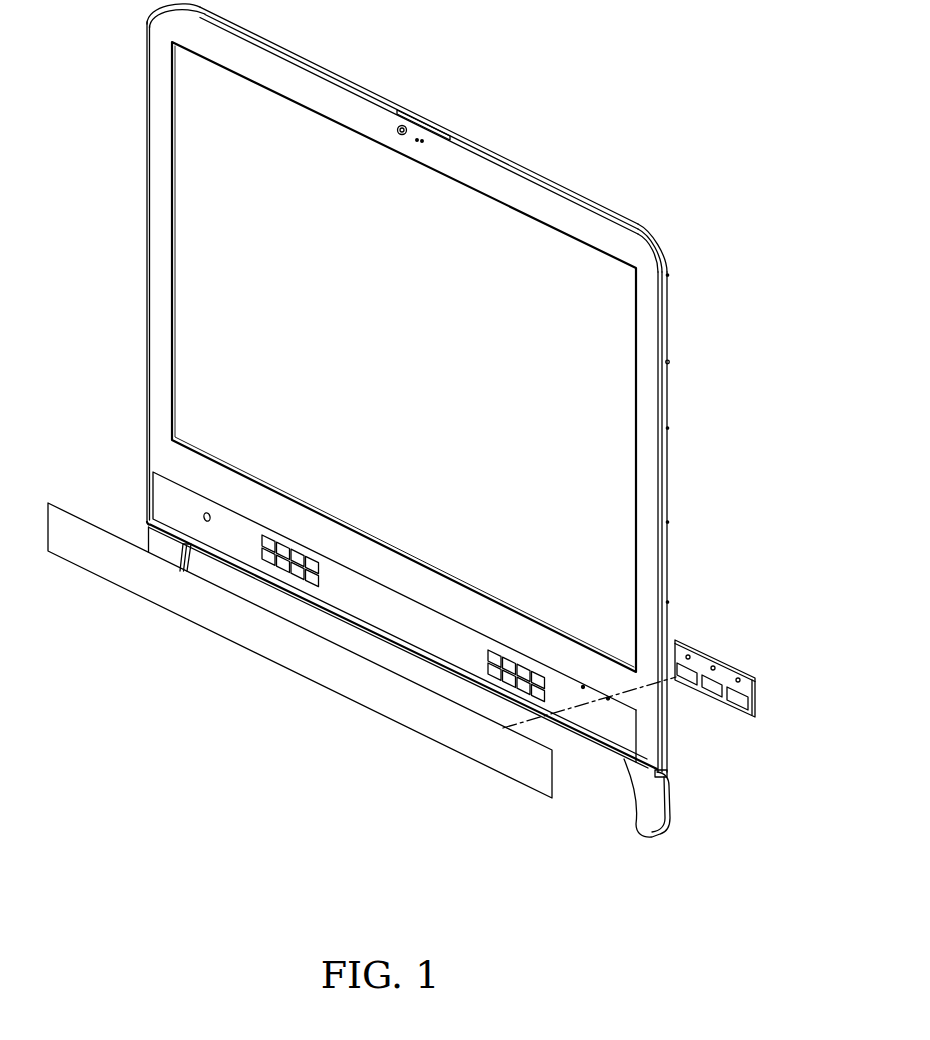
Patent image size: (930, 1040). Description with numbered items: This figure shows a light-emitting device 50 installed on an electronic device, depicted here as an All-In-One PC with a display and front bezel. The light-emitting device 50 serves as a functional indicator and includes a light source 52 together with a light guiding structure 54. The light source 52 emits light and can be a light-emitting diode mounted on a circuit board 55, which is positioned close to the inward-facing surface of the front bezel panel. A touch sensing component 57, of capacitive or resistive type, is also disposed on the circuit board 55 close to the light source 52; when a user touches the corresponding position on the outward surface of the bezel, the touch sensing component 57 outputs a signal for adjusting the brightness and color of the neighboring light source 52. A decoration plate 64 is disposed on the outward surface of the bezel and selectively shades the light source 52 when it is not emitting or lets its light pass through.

The light-emitting device 50 is at (359, 706).
The light source 52 is at (713, 665).
The light guiding structure 54 is at (633, 712).
The circuit board 55 is at (725, 672).
The touch sensing component 57 is at (711, 689).
The decoration plate 64 is at (522, 778).